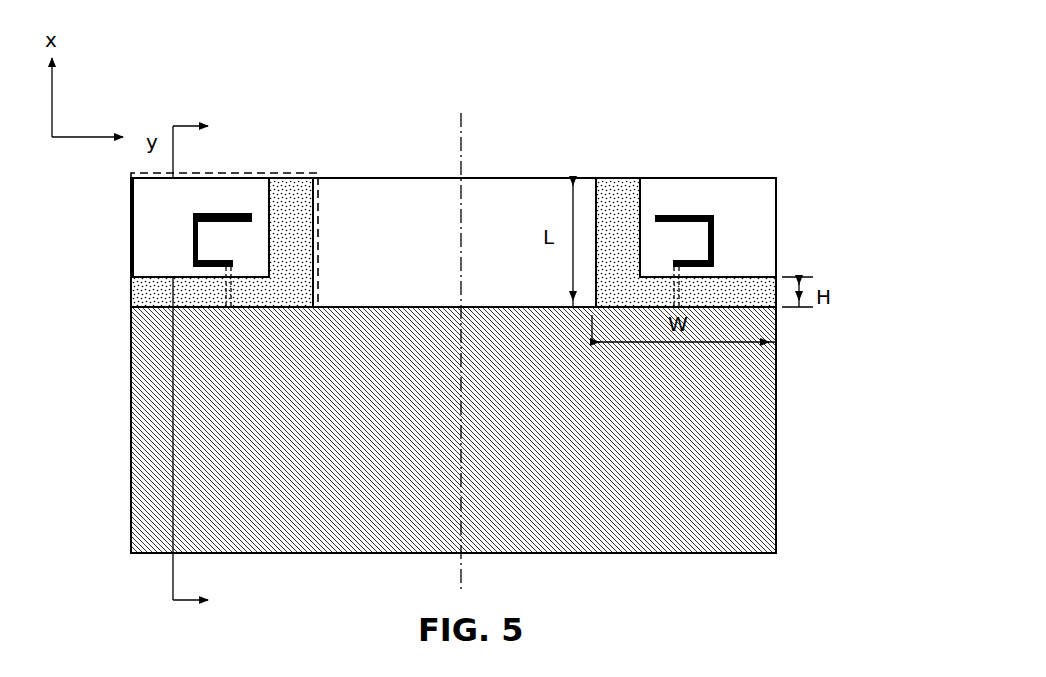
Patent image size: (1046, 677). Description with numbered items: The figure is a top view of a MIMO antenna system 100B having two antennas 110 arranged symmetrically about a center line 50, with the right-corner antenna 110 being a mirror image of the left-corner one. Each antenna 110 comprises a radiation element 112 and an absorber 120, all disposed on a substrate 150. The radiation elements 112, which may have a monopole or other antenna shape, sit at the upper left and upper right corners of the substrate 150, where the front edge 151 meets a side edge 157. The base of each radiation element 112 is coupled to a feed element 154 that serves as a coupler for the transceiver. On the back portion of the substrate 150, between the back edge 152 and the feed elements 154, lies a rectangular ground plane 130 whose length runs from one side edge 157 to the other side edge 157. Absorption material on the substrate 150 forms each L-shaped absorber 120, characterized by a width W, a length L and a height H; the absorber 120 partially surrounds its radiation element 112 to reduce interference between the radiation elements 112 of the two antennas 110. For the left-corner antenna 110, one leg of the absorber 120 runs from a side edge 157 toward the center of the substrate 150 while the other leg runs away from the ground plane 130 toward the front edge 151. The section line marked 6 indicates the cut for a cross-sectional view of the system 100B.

The MIMO antenna system 100B is at (406, 73).
The antenna 110 is at (243, 173).
The radiation element 112 is at (195, 213).
The absorber 120 is at (300, 228).
The ground plane 130 is at (759, 433).
The substrate 150 is at (502, 202).
The front edge 151 is at (363, 177).
The back edge 152 is at (583, 553).
The feed element 154 is at (228, 307).
The side edge 157 is at (131, 413).
The center line 50 is at (463, 150).
The section line 6- 6 is at (207, 364).